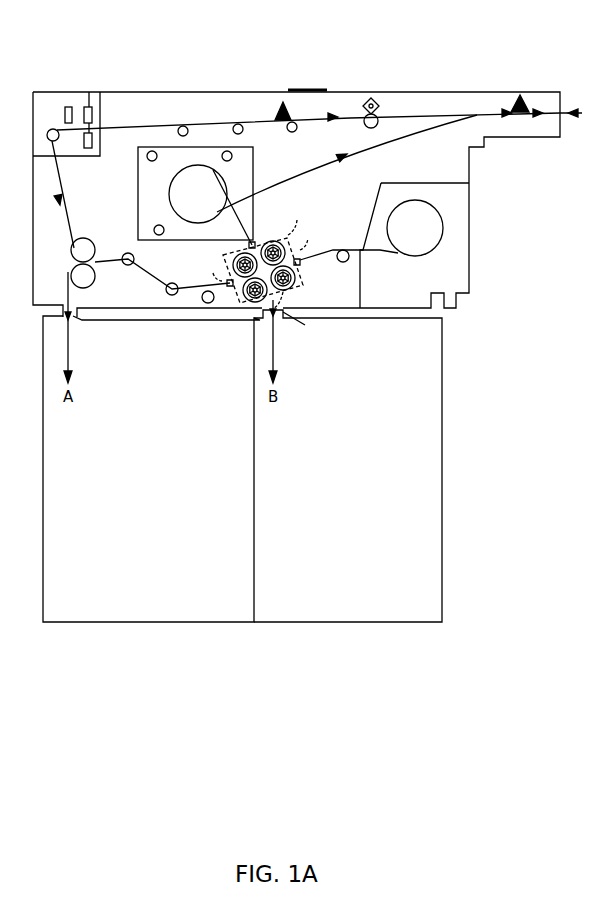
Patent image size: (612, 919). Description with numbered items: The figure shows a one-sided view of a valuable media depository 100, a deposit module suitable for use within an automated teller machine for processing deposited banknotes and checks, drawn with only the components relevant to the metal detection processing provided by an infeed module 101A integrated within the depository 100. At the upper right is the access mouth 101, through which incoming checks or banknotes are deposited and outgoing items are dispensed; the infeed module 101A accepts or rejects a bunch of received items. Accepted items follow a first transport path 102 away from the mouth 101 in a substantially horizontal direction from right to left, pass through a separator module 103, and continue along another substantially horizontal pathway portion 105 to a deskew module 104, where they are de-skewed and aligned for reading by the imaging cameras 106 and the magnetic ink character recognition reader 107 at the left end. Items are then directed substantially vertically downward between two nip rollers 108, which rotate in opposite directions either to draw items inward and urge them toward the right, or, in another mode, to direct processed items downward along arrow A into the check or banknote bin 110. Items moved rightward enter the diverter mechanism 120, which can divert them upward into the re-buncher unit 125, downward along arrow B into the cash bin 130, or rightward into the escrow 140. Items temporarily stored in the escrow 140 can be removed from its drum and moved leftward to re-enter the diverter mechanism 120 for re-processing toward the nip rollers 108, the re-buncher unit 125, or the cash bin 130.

The valuable media depository 100 is at (167, 91).
The access mouth 101 is at (580, 113).
The infeed module 101A is at (520, 95).
The first transport path 102 is at (433, 112).
The separator module 103 is at (366, 101).
The deskew module 104 is at (283, 98).
The pathway portion 105 is at (208, 125).
The imaging cameras 106 is at (107, 177).
The Magnetic Ink Character Recognition reader 107 is at (70, 105).
The nip rollers 108 is at (80, 236).
The check or banknote bin 110 is at (167, 505).
The diverter mechanism 120 is at (305, 250).
The re-buncher unit 125 is at (256, 168).
The cash bin 130 is at (355, 505).
The escrow 140 is at (462, 227).